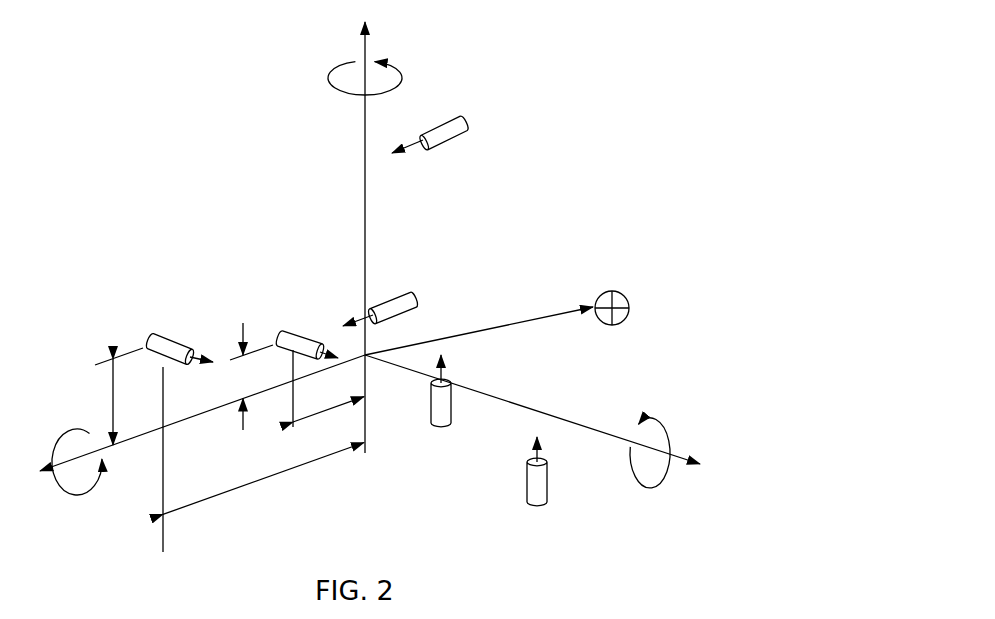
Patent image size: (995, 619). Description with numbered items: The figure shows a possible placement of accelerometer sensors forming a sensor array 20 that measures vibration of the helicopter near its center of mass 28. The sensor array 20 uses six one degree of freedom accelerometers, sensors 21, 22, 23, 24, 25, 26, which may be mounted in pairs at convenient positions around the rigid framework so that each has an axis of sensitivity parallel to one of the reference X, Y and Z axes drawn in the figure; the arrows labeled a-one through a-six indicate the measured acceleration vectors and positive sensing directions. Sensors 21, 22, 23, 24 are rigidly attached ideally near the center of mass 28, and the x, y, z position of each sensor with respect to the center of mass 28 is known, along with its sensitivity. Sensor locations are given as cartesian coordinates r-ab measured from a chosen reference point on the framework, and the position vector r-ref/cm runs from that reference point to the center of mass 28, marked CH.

The sensor array 20 is at (600, 110).
The sensor 21 is at (157, 340).
The sensor 22 is at (308, 342).
The sensor 23 is at (527, 483).
The sensor 24 is at (448, 383).
The sensor 25 is at (452, 143).
The sensor 26 is at (380, 297).
The center of mass 28 is at (623, 292).